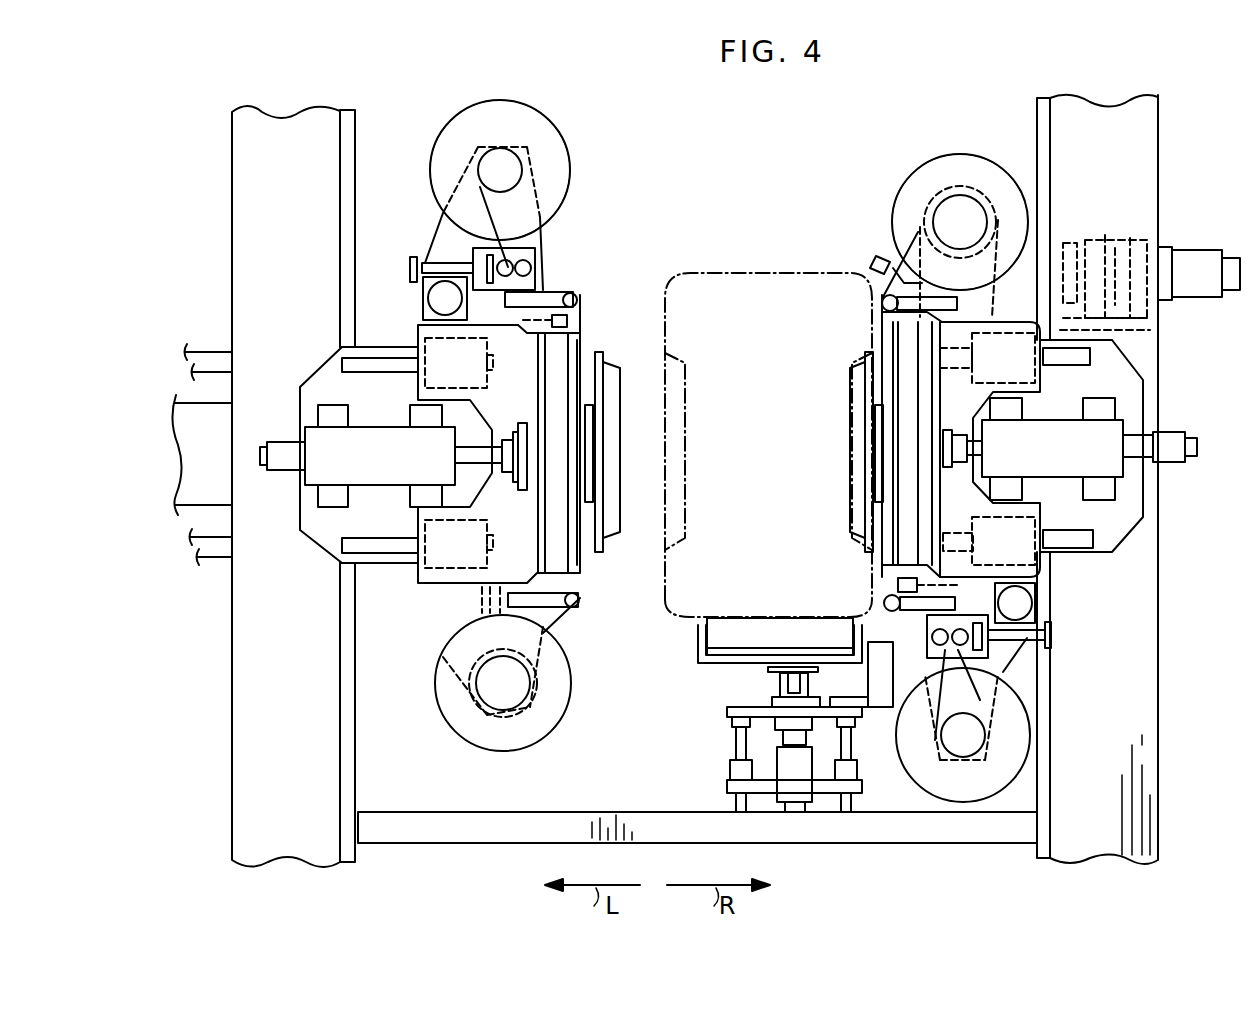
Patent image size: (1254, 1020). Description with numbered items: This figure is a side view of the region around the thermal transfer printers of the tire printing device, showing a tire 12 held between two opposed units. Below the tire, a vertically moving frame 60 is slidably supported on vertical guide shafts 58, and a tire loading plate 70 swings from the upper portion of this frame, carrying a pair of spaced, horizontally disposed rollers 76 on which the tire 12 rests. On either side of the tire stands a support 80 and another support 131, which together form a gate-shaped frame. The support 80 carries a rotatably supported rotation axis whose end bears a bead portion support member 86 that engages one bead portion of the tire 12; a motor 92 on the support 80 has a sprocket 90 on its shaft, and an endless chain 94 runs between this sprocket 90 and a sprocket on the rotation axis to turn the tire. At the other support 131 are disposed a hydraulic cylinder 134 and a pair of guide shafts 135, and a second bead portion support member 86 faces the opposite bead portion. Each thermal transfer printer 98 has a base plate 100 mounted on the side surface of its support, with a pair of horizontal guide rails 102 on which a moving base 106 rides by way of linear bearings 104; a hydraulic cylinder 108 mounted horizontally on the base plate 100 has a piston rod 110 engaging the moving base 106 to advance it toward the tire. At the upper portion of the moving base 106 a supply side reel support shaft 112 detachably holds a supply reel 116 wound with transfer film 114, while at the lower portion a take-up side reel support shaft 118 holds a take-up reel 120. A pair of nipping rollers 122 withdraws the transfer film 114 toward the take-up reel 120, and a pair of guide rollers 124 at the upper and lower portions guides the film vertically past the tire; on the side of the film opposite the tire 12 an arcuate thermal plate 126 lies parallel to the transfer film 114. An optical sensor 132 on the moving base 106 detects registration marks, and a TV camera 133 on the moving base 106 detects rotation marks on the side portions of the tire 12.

The tire 12 is at (808, 272).
The guide shafts 58 is at (727, 787).
The vertically moving frame 60 is at (730, 716).
The tire loading plate 70 is at (710, 663).
The rollers 76 is at (780, 630).
The support 80 is at (1090, 96).
The bead portion support member 86 is at (610, 450).
The sprocket 90 is at (1095, 256).
The motor 92 is at (1200, 250).
The endless chain 94 is at (1068, 262).
The thermal transfer printer 98 is at (495, 98).
The base plate 100 is at (1125, 362).
The guide rails 102 is at (342, 364).
The linear bearings 104 is at (428, 343).
The moving base 106 is at (455, 590).
The hydraulic cylinder 108 is at (330, 478).
The piston rod 110 is at (478, 462).
The supply side reel support shaft 112 is at (505, 695).
The transfer film 114 is at (557, 650).
The supply reel 116 is at (562, 725).
The take-up side reel support shaft 118 is at (510, 165).
The take-up reel 120 is at (572, 150).
The nipping rollers 122 is at (535, 262).
The guide rollers 124 is at (577, 300).
The thermal plate 126 is at (580, 352).
The support 131 is at (306, 110).
The optical sensor 132 is at (570, 321).
The TV camera 133 is at (876, 256).
The hydraulic cylinder 134 is at (222, 450).
The guide shafts 135 is at (207, 352).